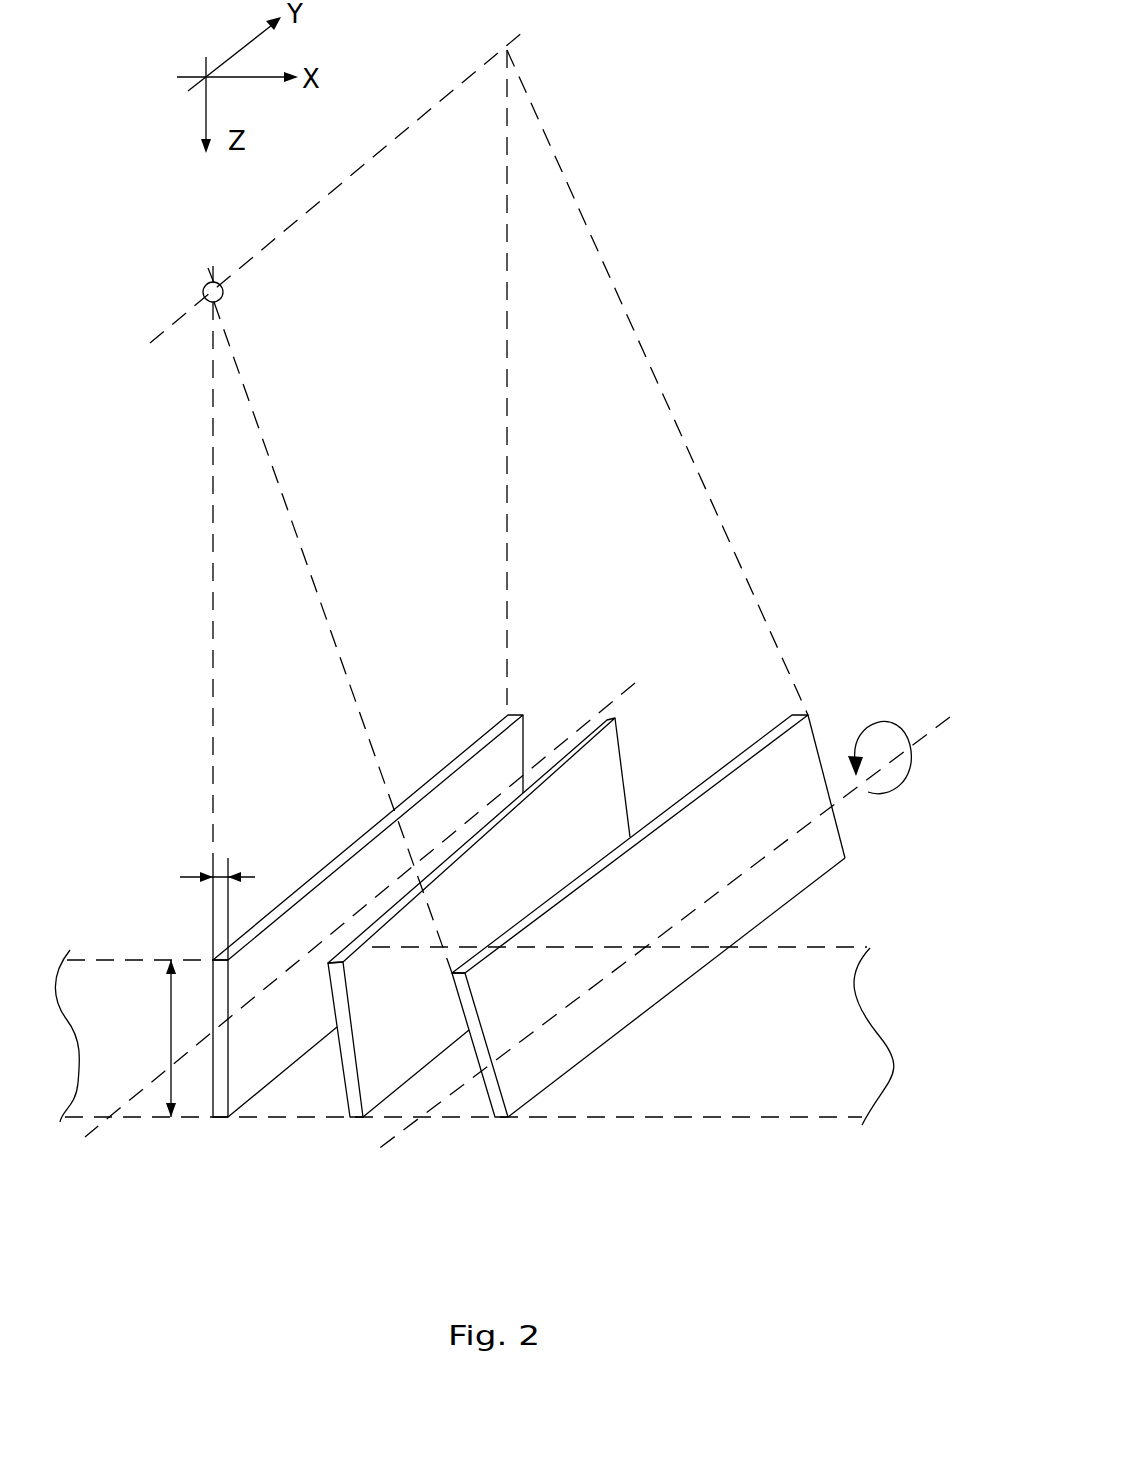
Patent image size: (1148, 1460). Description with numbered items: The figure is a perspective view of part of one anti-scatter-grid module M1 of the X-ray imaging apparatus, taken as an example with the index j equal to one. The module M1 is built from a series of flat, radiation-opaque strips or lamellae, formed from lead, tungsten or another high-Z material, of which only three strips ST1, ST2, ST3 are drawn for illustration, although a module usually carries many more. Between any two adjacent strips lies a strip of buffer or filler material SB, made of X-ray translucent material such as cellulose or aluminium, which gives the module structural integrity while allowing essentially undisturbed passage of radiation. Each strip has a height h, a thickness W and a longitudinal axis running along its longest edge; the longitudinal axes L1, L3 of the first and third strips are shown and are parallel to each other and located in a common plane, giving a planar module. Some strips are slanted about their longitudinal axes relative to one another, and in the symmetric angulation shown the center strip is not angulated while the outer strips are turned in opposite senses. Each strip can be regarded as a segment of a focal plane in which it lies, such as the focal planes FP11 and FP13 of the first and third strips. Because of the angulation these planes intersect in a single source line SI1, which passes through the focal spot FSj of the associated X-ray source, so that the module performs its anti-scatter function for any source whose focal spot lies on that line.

The focal spot FSj is at (203, 290).
The source line SI1 is at (377, 153).
The focal plane FP11 is at (210, 517).
The focal plane FP13 is at (643, 337).
The longitudinal axis L1 is at (627, 687).
The longitudinal axis L3 is at (920, 738).
The buffer material strips SB is at (845, 1055).
The strip ST1 is at (222, 1118).
The strip ST2 is at (353, 1118).
The strip ST3 is at (505, 1118).
The grid module M1 is at (482, 1049).
The strip thickness W is at (217, 889).
The strip height h is at (161, 1038).